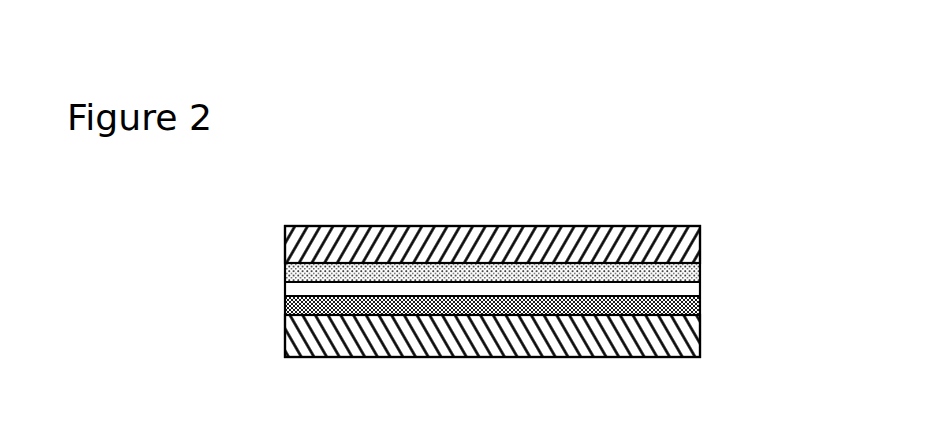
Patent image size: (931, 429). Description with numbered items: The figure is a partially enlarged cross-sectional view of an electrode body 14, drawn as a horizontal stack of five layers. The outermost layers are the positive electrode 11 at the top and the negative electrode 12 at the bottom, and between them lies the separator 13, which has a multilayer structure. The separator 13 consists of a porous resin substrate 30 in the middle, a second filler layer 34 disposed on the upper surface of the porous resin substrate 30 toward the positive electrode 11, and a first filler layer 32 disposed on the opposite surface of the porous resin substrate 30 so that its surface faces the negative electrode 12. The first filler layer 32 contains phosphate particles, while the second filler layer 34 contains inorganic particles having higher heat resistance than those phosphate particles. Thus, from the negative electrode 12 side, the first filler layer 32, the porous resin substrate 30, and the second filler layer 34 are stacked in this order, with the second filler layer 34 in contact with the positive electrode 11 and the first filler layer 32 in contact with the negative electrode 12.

The electrode body 14 is at (678, 118).
The positive electrode 11 is at (700, 253).
The negative electrode 12 is at (700, 337).
The separator 13 is at (197, 245).
The second filler layer 34 is at (285, 271).
The porous resin substrate 30 is at (285, 289).
The first filler layer 32 is at (285, 305).